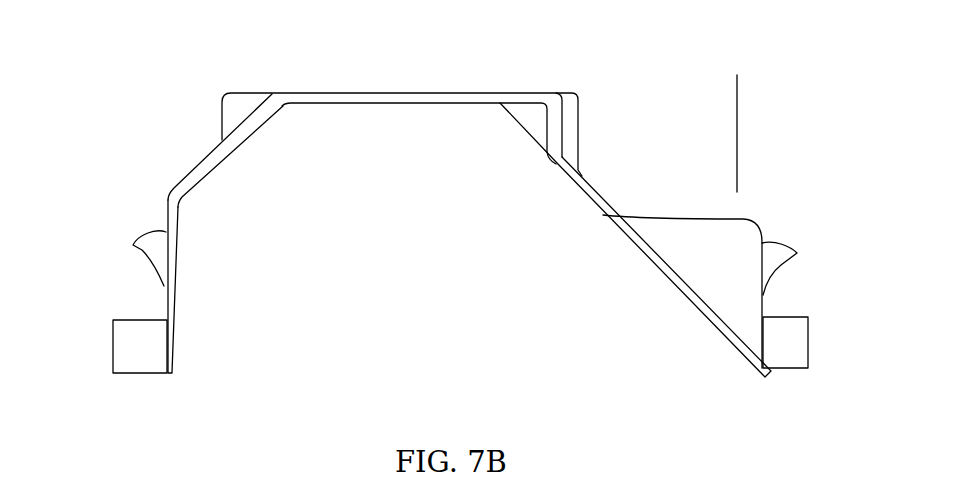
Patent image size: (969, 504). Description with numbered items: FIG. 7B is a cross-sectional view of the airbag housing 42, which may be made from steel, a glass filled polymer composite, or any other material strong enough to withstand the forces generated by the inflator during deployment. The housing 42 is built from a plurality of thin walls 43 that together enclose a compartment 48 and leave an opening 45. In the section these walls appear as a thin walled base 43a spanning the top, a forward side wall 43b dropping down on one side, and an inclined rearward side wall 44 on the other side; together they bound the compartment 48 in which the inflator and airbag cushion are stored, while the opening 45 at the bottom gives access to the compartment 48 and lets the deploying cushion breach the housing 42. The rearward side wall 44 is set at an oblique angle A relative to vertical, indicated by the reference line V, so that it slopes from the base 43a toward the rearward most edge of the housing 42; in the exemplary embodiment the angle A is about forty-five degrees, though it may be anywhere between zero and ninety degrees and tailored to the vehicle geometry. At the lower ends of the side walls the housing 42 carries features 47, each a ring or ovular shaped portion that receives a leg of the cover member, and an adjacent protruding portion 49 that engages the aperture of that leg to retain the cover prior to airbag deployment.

The housing 42 is at (450, 238).
The thin walls 43 is at (192, 172).
The thin walled base 43a is at (423, 92).
The forward side wall 43b is at (177, 297).
The inclined rearward side wall 44 is at (600, 215).
The opening 45 is at (374, 384).
The features 47 is at (101, 361).
The compartment 48 is at (414, 235).
The protruding portion 49 is at (146, 245).
The oblique angle A is at (726, 155).
The vertical V is at (737, 86).